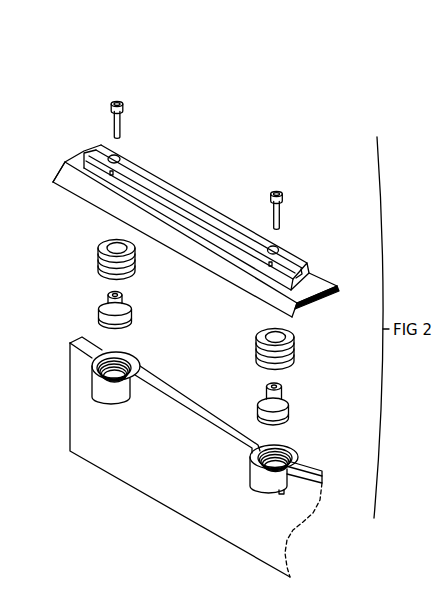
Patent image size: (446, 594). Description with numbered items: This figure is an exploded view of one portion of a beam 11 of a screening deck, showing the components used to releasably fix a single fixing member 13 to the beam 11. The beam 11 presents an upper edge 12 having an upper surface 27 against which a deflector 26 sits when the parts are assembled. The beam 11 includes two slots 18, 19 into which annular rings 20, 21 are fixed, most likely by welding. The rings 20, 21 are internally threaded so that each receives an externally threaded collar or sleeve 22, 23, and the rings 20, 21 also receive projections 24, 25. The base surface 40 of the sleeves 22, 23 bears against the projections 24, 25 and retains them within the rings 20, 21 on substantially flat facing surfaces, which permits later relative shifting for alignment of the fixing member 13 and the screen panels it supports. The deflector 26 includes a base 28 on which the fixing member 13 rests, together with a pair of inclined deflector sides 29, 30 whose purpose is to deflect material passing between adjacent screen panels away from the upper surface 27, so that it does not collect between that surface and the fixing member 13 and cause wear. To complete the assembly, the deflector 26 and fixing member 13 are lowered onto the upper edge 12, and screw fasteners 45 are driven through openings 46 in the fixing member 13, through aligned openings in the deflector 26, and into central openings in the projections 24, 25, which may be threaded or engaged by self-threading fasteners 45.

The beam 11 is at (181, 466).
The upper edge 12 is at (183, 402).
The fixing member 13 is at (201, 217).
The slot 18 is at (120, 400).
The slot 19 is at (277, 493).
The annular ring 20 is at (83, 391).
The annular ring 21 is at (267, 501).
The sleeve 22 is at (98, 257).
The sleeve 23 is at (293, 353).
The projection 24 is at (107, 310).
The projection 25 is at (287, 413).
The deflector 26 is at (312, 287).
The upper surface 27 is at (312, 472).
The base 28 is at (78, 162).
The inclined deflector side 29 is at (73, 183).
The inclined deflector side 30 is at (336, 287).
The base surface 40 is at (103, 273).
The screw fastener 45 is at (121, 118).
The opening 46 is at (117, 158).